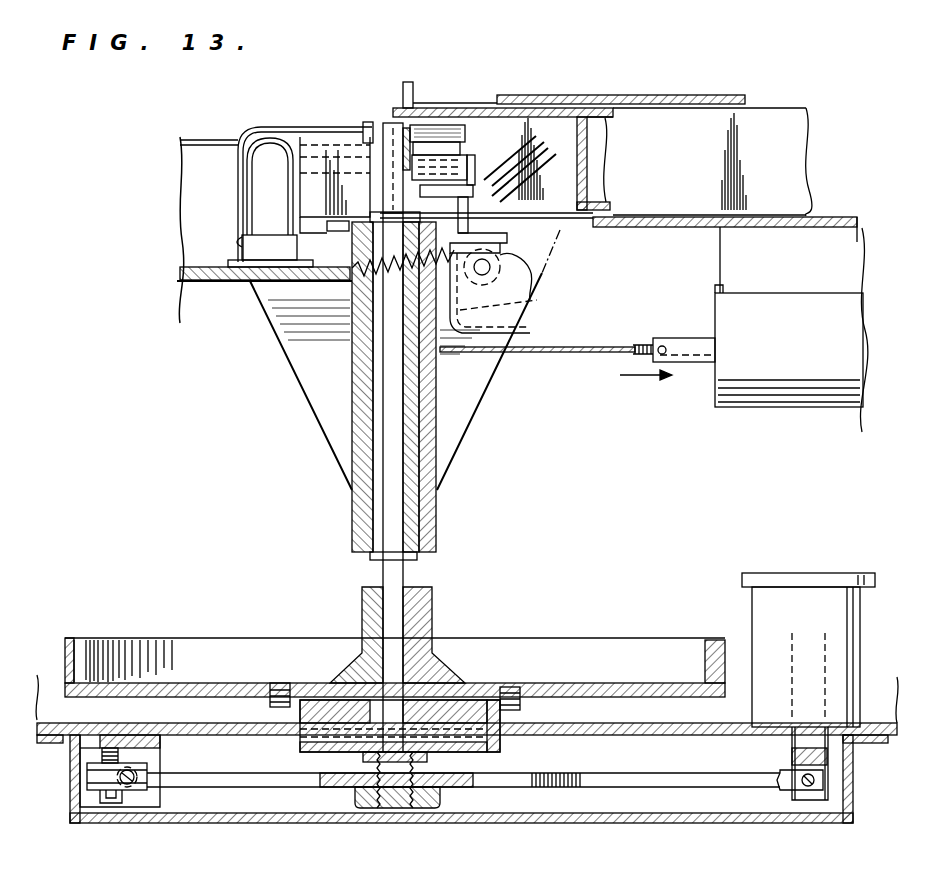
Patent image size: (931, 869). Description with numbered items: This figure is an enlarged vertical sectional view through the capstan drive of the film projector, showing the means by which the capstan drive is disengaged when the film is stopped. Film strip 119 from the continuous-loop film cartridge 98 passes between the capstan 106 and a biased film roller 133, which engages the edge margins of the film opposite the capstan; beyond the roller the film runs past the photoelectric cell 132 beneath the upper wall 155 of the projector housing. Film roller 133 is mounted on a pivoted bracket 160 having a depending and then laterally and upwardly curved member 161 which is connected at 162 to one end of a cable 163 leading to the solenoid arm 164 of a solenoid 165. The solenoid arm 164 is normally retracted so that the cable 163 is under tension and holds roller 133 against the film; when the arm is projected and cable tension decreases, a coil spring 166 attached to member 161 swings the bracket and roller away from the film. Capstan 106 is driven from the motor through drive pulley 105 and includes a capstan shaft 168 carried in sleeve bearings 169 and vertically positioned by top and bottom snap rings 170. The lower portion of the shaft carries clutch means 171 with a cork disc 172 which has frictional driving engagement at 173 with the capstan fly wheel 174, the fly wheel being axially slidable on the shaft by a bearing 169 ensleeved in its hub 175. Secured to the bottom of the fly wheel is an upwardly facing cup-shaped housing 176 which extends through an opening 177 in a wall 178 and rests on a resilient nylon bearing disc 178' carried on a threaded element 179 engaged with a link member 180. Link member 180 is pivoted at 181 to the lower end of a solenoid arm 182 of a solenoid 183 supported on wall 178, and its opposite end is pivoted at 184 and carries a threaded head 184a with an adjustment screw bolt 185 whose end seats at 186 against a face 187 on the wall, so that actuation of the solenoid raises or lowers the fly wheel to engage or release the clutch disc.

The film cartridge 98 is at (787, 125).
The drive pulley 105 is at (68, 652).
The capstan 106 is at (386, 124).
The film strip 119 is at (410, 132).
The photoelectric cell 132 is at (262, 185).
The film roller 133 is at (452, 130).
The upper wall 155 is at (684, 95).
The pivoted bracket 160 is at (470, 200).
The depending bracket member 161 is at (515, 281).
The cable connection 162 is at (377, 300).
The cable 163 is at (537, 353).
The solenoid arm 164 is at (680, 345).
The solenoid 165 is at (789, 346).
The coil spring 166 is at (383, 272).
The capstan shaft 168 is at (398, 485).
The sleeve bearings 169 is at (412, 514).
The snap rings 170 is at (370, 558).
The clutch means 171 is at (500, 683).
The disc 172 is at (455, 683).
The frictional driving engagement 173 is at (322, 682).
The capstan fly wheel 174 is at (182, 682).
The fly wheel hub 175 is at (362, 600).
The cup-shaped housing 176 is at (500, 743).
The opening 177 is at (278, 746).
The wall 178 is at (467, 749).
The resilient nylon bearing disc 178' is at (430, 804).
The threaded element 179 is at (393, 808).
The link member 180 is at (620, 785).
The pivotal connection 181 is at (808, 794).
The solenoid arm 182 is at (827, 757).
The solenoid 183 is at (777, 603).
The pivot 184 is at (131, 785).
The threaded head 184a is at (87, 777).
The adjustment screw bolt 185 is at (118, 803).
The seat 186 is at (102, 753).
The face 187 is at (137, 735).